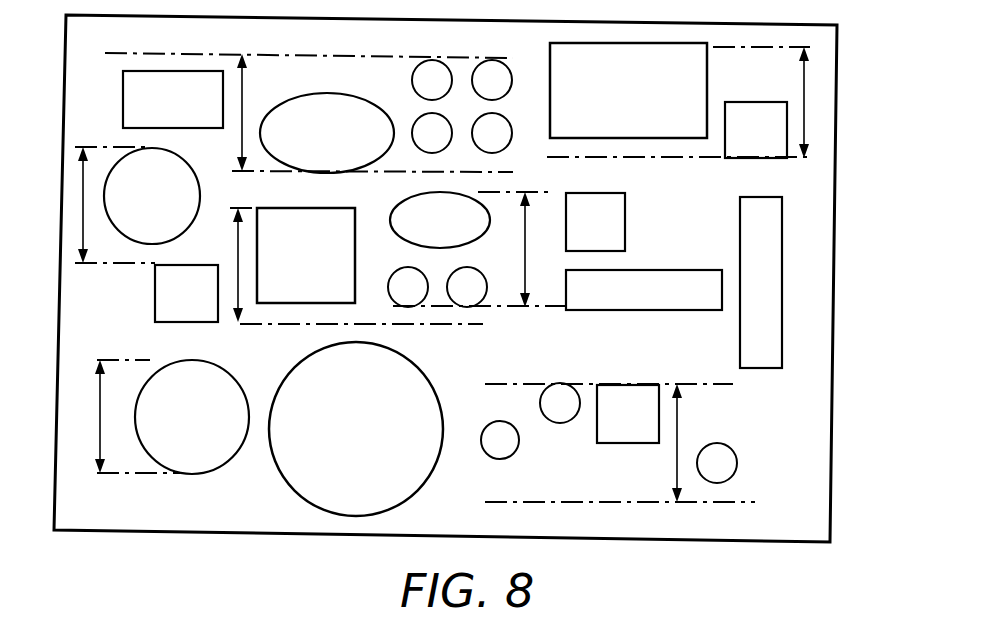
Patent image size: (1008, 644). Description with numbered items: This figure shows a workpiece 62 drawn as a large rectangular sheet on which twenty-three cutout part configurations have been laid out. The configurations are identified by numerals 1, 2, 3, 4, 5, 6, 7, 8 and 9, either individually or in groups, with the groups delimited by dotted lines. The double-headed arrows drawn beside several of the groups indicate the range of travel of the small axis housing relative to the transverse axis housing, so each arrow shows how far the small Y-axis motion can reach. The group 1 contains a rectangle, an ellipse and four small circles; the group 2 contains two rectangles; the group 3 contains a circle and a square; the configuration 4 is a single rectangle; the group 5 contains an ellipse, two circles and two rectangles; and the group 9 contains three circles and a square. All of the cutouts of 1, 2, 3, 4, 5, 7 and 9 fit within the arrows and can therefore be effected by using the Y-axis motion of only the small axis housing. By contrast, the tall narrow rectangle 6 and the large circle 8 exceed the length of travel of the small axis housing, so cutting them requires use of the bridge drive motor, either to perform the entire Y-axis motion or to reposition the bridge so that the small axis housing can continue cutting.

The cutout part configuration group 1 is at (278, 96).
The cutout part configuration group 2 is at (760, 89).
The cutout part configuration group 3 is at (155, 220).
The cutout part configuration 4 is at (313, 270).
The cutout part configuration group 5 is at (525, 222).
The cutout part configuration 6 is at (737, 242).
The cutout part configuration 7 is at (161, 427).
The cutout part configuration 8 is at (363, 436).
The cutout part configuration group 9 is at (573, 465).
The workpiece 62 is at (833, 427).